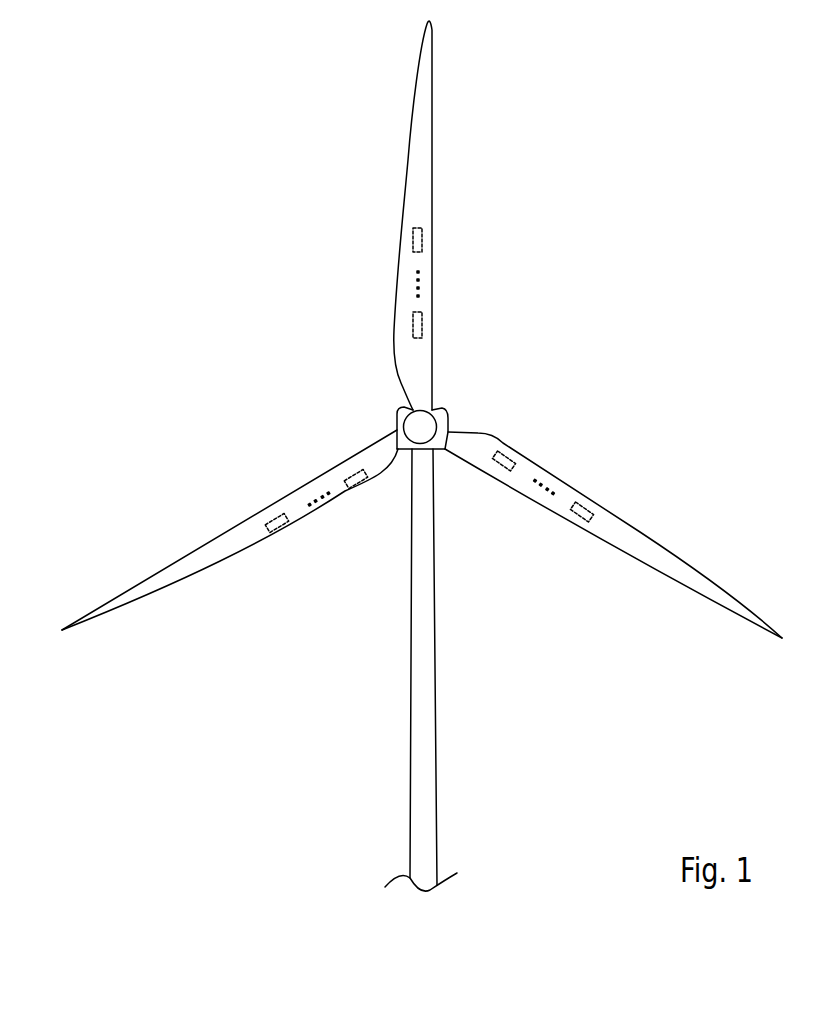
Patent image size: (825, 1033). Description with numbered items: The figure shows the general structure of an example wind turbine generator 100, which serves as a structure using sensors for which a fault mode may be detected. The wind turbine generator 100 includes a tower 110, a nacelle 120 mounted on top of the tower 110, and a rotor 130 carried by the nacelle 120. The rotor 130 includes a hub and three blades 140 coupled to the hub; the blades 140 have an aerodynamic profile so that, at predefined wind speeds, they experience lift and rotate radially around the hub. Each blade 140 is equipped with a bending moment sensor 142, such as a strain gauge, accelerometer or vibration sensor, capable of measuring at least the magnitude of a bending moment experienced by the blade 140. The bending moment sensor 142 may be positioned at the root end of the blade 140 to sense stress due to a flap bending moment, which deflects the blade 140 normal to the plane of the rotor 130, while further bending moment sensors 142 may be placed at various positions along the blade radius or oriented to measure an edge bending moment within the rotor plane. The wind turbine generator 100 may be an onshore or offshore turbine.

The wind turbine generator 100 is at (766, 219).
The tower 110 is at (420, 738).
The nacelle 120 is at (401, 410).
The rotor 130 is at (437, 426).
The blade 140 is at (400, 308).
The bending moment sensor 142 is at (413, 237).